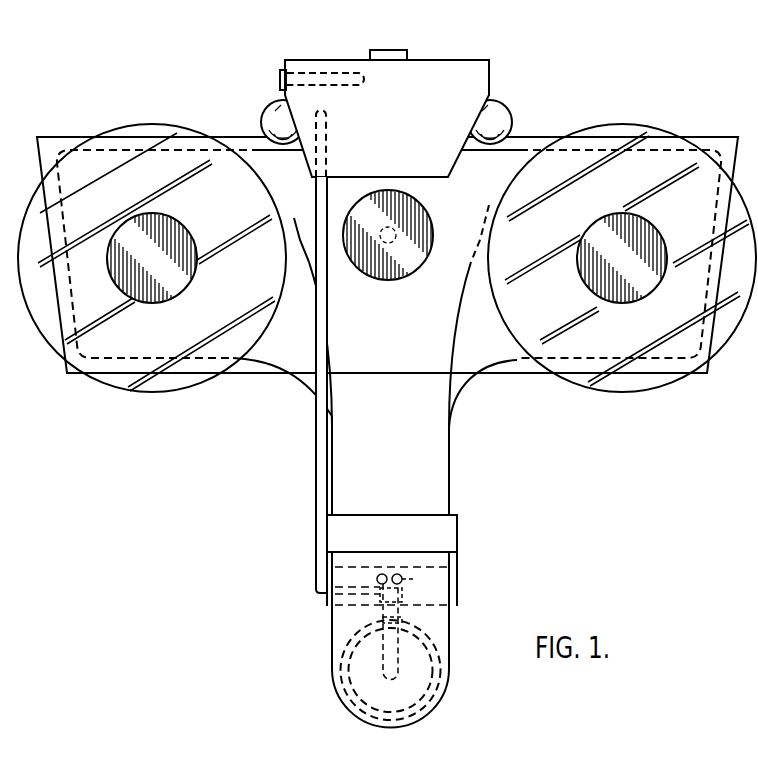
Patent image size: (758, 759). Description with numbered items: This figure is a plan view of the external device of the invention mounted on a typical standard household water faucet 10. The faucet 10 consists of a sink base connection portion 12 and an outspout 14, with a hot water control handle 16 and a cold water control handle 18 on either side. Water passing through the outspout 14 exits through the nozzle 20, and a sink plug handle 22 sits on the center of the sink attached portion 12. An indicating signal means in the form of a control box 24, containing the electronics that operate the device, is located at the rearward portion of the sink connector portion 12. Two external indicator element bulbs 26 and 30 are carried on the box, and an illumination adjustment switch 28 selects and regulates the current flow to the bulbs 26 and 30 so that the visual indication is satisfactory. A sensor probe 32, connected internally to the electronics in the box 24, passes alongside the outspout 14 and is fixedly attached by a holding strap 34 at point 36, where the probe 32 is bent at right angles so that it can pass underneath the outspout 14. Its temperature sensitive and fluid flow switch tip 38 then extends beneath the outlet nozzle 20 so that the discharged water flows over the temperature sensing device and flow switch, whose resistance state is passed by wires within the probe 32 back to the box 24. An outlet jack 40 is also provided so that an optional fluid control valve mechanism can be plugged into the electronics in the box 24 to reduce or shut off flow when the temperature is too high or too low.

The water faucet 10 is at (531, 135).
The sink base connection portion 12 is at (518, 368).
The outspout 14 is at (443, 485).
The hot water control handle 16 is at (163, 385).
The cold water control handle 18 is at (635, 384).
The nozzle 20 is at (443, 698).
The sink plug handle 22 is at (395, 275).
The control box 24 is at (422, 65).
The external indicator element bulb 26 is at (270, 116).
The illumination adjustment switch 28 is at (386, 51).
The external indicator element bulb 30 is at (500, 124).
The sensor probe 32 is at (320, 457).
The holding strap 34 is at (457, 594).
The attachment point 36 is at (380, 598).
The temperature sensitive and fluid flow switch tip 38 is at (385, 661).
The outlet jack 40 is at (302, 78).